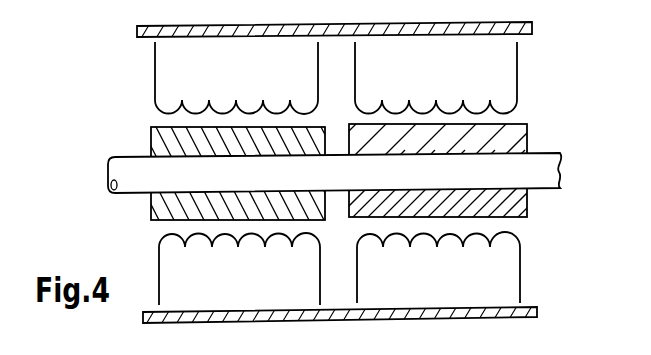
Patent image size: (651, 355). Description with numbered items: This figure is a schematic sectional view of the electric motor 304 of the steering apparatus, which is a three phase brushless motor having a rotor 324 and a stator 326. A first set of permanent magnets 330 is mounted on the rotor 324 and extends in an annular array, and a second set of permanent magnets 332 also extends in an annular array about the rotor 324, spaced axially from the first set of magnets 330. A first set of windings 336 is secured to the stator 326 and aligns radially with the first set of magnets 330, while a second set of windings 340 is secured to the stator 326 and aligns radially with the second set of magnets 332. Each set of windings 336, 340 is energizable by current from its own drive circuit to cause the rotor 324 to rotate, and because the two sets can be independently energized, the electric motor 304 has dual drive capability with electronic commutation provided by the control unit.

The electric motor 304 is at (78, 196).
The rotor 324 is at (552, 176).
The stator 326 is at (532, 35).
The first set of permanent magnets 330 is at (168, 127).
The second set of permanent magnets 332 is at (510, 140).
The first set of windings 336 is at (219, 108).
The second set of windings 340 is at (475, 108).